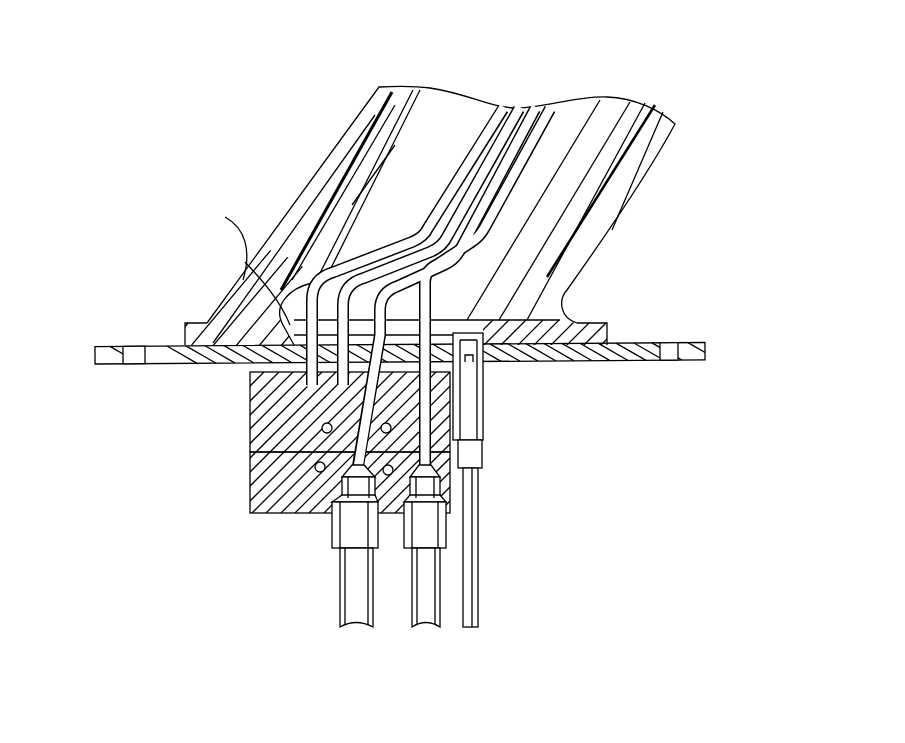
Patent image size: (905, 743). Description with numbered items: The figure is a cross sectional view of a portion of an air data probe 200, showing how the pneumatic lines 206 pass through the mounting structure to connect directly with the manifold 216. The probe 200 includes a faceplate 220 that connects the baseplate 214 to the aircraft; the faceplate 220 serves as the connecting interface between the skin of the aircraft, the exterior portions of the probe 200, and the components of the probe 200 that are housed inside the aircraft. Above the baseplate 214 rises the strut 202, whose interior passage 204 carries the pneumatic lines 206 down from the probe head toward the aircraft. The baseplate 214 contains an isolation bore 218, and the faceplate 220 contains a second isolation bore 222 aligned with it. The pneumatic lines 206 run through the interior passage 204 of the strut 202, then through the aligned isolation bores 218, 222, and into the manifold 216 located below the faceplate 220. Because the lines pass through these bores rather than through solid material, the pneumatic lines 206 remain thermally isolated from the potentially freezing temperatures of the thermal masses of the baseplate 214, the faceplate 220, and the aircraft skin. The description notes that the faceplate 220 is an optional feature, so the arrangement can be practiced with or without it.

The probe 200 is at (279, 148).
The strut 202 is at (660, 157).
The interior passage 204 is at (414, 146).
The pneumatic lines 206 is at (463, 170).
The baseplate 214 is at (185, 323).
The manifold 216 is at (260, 513).
The isolation bore 218 is at (214, 239).
The faceplate 220 is at (137, 357).
The second isolation bore 222 is at (250, 400).